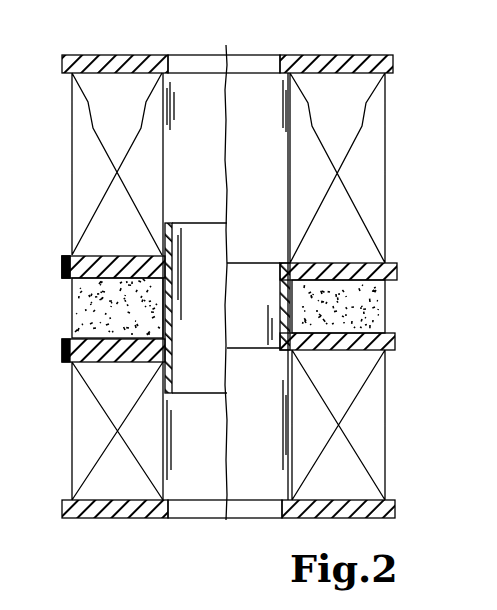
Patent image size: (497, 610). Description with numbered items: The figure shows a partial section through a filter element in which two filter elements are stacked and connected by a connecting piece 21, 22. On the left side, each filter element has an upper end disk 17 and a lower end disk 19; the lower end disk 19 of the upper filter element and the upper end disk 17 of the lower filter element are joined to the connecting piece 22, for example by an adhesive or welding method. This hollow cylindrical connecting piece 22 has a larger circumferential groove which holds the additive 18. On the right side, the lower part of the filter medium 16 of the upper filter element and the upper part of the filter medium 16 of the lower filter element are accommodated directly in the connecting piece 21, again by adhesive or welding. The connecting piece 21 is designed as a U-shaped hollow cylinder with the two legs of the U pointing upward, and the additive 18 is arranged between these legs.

The filter medium 16 is at (358, 172).
The upper end disk 17 is at (382, 70).
The additive 18 is at (82, 318).
The lower end disk 19 is at (66, 262).
The connecting piece 21 is at (392, 268).
The connecting piece 22 is at (70, 278).